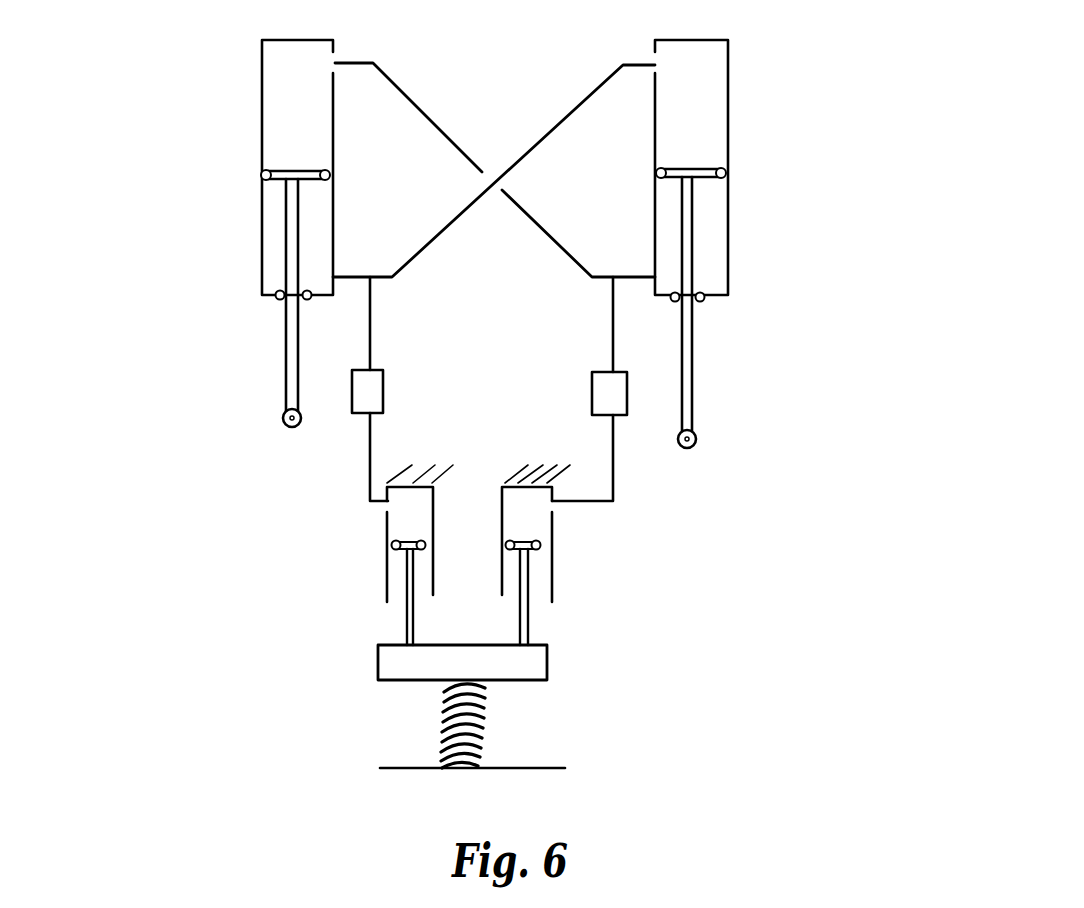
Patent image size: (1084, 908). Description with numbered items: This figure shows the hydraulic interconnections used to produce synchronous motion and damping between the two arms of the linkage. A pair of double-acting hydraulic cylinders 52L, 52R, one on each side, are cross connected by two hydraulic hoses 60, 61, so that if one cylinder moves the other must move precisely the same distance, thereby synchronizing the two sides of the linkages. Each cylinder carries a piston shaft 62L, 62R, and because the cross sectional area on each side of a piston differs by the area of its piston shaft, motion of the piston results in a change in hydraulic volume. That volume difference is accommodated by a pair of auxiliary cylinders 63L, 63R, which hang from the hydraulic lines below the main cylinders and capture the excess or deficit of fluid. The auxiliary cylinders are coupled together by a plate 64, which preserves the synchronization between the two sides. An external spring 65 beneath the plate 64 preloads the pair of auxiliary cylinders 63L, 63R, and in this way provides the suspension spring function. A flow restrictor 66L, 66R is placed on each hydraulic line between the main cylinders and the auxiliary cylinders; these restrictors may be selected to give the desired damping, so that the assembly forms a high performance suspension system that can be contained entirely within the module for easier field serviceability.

The left double-acting hydraulic cylinder 52L is at (262, 135).
The right double-acting hydraulic cylinder 52R is at (728, 96).
The left piston shaft 62L is at (286, 355).
The right piston shaft 62R is at (693, 358).
The hydraulic hose 60 is at (537, 223).
The hydraulic hose 61 is at (463, 210).
The left flow restrictor 66L is at (352, 402).
The right flow restrictor 66R is at (627, 400).
The left auxiliary cylinder 63L is at (380, 529).
The right auxiliary cylinder 63R is at (553, 538).
The plate 64 is at (547, 661).
The external spring 65 is at (482, 741).